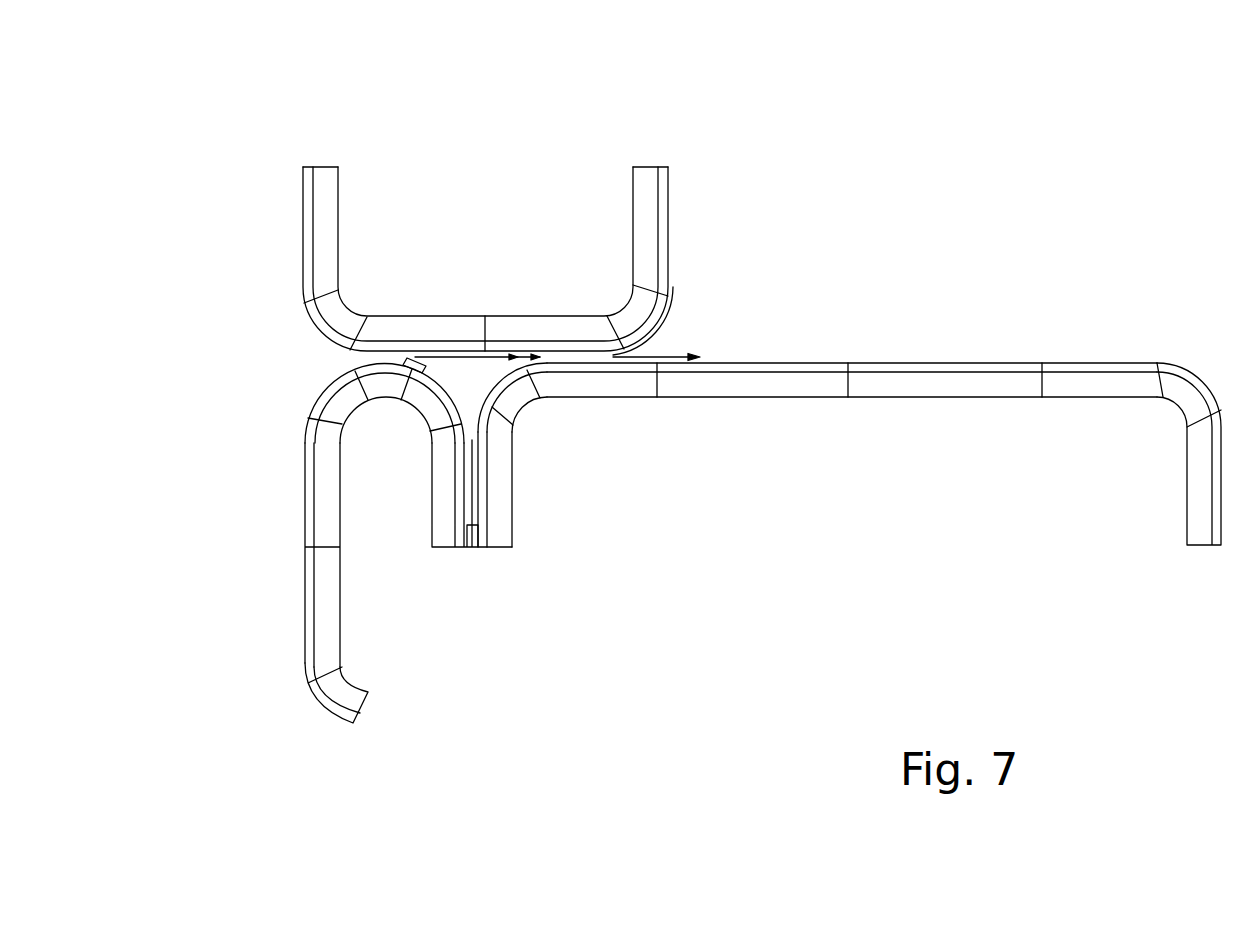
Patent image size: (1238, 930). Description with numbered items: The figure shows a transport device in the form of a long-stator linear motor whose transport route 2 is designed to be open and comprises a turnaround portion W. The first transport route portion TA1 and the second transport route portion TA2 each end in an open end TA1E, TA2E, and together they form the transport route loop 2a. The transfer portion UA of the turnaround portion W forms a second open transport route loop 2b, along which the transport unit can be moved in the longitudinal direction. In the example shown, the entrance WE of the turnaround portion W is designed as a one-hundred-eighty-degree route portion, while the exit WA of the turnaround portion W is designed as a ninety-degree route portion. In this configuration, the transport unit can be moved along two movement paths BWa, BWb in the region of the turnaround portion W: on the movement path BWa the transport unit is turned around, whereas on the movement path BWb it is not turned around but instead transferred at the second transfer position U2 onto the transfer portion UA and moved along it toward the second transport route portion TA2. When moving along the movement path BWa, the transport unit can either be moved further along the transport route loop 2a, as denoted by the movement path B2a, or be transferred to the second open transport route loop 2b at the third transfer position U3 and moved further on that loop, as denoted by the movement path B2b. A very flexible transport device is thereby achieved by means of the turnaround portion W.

The transport route 2 is at (687, 404).
The transport route loop 2a is at (890, 444).
The second open transport route loop 2b is at (541, 248).
The transfer portion UA is at (453, 278).
The second transfer position U2 is at (392, 355).
The third transfer position U3 is at (565, 353).
The movement path BWb is at (468, 355).
The movement path BWa is at (425, 395).
The movement path B2b is at (677, 300).
The movement path B2a is at (660, 357).
The first transport route portion TA1 is at (317, 599).
The open end TA1E is at (386, 717).
The second transport route portion TA2 is at (852, 323).
The open end TA2E is at (1165, 506).
The turnaround portion W is at (427, 554).
The exit WA is at (550, 457).
The entrance WE is at (422, 495).